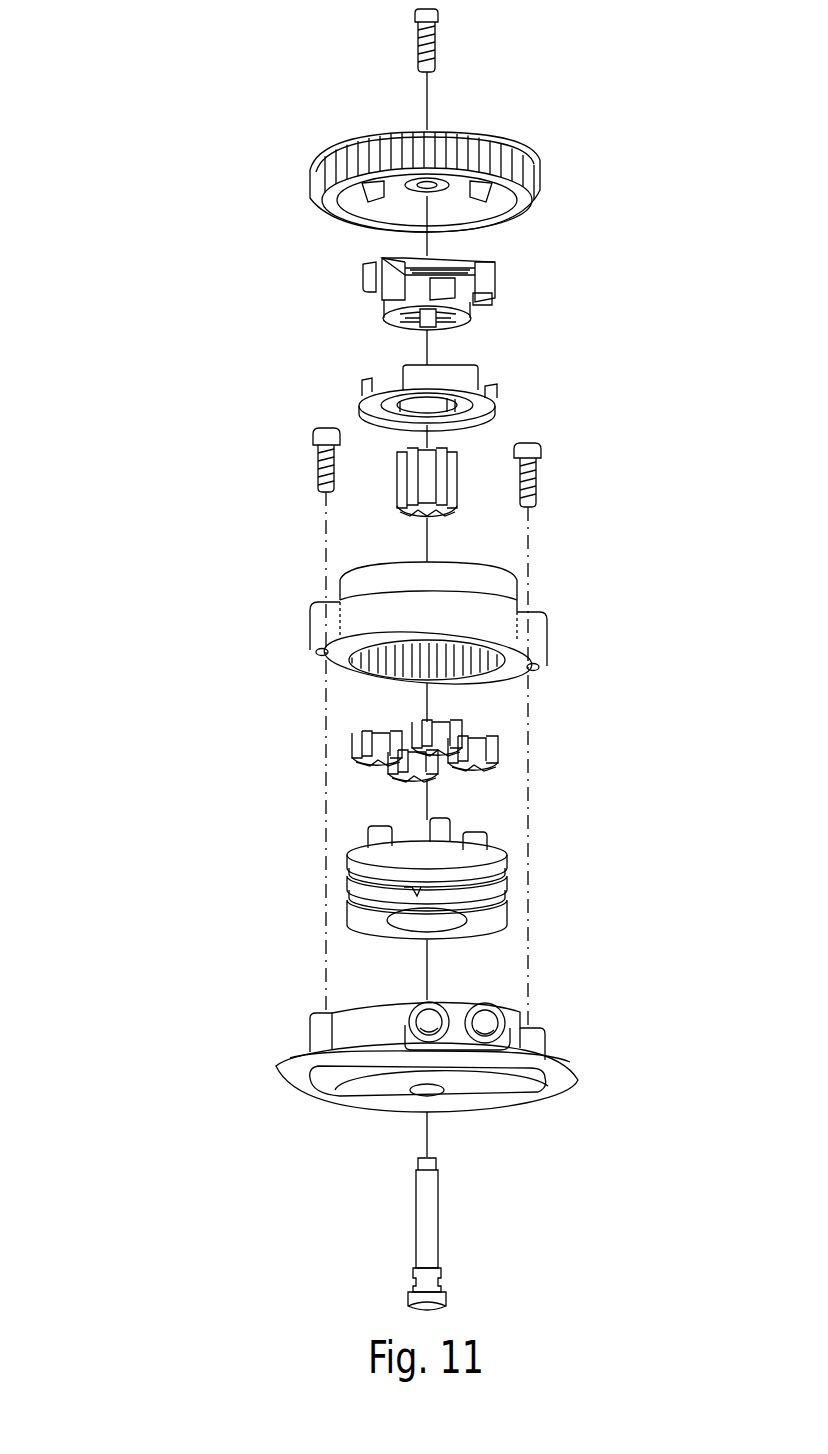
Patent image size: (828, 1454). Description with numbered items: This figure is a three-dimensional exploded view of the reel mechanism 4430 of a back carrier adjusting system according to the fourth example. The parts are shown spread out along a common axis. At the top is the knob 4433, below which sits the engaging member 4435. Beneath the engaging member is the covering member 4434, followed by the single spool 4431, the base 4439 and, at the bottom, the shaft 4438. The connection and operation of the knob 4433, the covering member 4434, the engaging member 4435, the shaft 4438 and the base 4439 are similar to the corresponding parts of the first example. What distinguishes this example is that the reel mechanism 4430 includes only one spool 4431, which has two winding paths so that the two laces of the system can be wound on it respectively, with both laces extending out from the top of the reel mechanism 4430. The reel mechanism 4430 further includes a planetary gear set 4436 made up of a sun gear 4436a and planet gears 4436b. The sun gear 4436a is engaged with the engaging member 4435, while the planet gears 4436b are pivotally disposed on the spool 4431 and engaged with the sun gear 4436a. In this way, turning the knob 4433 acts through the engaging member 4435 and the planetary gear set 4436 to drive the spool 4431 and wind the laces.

The reel mechanism 4430 is at (177, 45).
The knob 4433 is at (312, 195).
The engaging member 4435 is at (392, 272).
The planetary gear set 4436 is at (140, 553).
The sun gear 4436a is at (407, 490).
The planet gears 4436b is at (363, 745).
The covering member 4434 is at (537, 637).
The spool 4431 is at (352, 858).
The base 4439 is at (333, 1028).
The shaft 4438 is at (422, 1222).